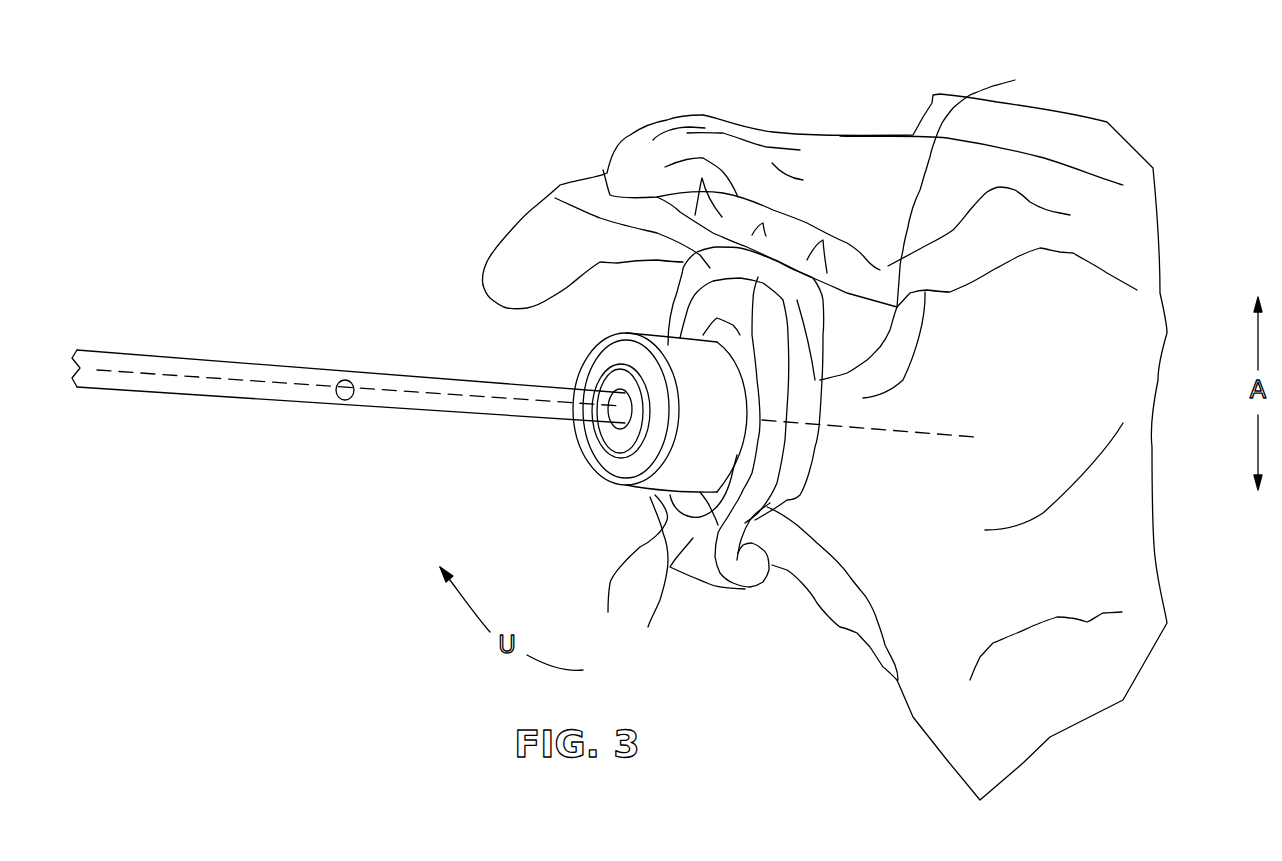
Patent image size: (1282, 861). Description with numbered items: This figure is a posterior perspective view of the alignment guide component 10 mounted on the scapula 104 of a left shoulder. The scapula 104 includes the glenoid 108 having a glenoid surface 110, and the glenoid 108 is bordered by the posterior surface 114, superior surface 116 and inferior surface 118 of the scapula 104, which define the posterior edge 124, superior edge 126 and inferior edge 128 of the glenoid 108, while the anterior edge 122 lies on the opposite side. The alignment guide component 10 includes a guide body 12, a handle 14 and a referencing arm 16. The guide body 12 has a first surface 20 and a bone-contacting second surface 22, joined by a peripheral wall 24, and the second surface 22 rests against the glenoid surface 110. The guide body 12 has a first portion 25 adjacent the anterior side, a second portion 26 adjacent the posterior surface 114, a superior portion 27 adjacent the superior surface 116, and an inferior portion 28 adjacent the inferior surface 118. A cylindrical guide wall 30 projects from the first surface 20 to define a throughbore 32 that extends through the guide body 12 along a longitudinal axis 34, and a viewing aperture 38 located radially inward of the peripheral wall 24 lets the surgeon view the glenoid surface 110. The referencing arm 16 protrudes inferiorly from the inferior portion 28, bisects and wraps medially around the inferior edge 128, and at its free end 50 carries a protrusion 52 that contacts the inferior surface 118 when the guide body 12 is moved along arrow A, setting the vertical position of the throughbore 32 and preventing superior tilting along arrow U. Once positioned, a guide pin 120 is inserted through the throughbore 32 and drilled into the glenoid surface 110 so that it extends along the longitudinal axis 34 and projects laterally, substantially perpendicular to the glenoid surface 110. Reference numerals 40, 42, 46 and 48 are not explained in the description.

The alignment guide component 10 is at (383, 300).
The guide body 12 is at (630, 569).
The handle 14 is at (110, 360).
The referencing arm 16 is at (712, 583).
The first surface 20 is at (631, 660).
The second surface 22 is at (822, 398).
The peripheral wall 24 is at (772, 567).
The first portion 25 is at (565, 462).
The second portion 26 is at (823, 477).
The superior portion 27 is at (757, 275).
The inferior portion 28 is at (637, 498).
The guide wall 30 is at (610, 453).
The throughbore 32 is at (605, 430).
The longitudinal axis 34 is at (262, 385).
The viewing aperture 38 is at (740, 362).
The cylindrical body 40 is at (613, 427).
The insertion direction arrow 42 is at (118, 392).
The front face 46 is at (592, 372).
The rim 48 is at (612, 395).
The free end 50 is at (728, 600).
The protrusion 52 is at (753, 573).
The scapula 104 is at (1112, 383).
The glenoid 108 is at (657, 280).
The glenoid surface 110 is at (557, 197).
The posterior surface 114 is at (904, 474).
The superior surface 116 is at (700, 160).
The inferior surface 118 is at (835, 600).
The guide pin 120 is at (372, 395).
The anterior edge 122 is at (673, 300).
The posterior edge 124 is at (978, 223).
The superior edge 126 is at (738, 250).
The inferior edge 128 is at (898, 682).